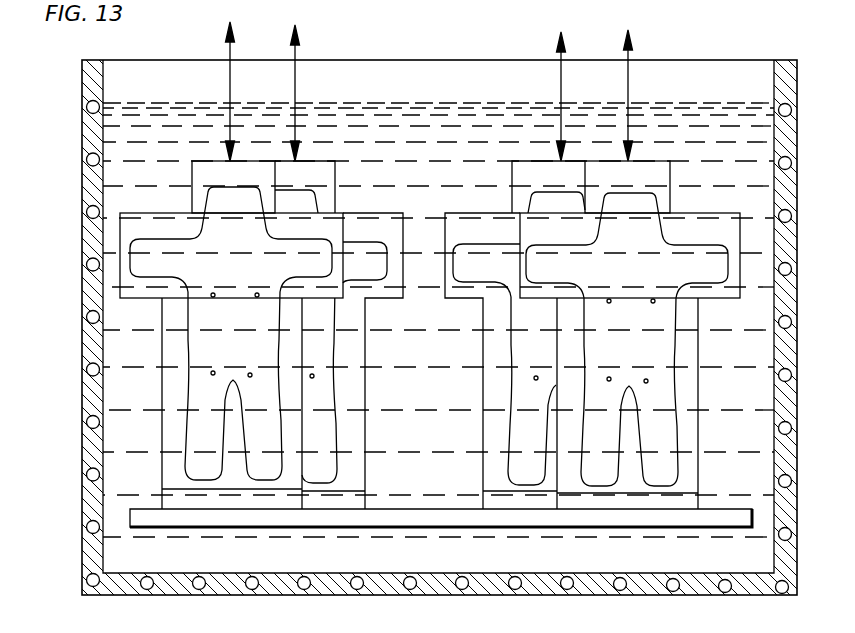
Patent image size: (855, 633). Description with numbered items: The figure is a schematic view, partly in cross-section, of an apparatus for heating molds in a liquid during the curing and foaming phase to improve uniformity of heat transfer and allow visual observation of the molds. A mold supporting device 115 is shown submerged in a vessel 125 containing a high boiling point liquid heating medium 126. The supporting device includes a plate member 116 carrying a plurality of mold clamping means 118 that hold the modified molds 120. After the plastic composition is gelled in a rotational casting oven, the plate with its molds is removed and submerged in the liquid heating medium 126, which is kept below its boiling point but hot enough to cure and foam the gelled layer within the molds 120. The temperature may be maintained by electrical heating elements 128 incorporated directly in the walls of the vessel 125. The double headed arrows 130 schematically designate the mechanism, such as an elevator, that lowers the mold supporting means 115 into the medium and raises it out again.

The mold supporting device 115 is at (372, 152).
The plate member 116 is at (724, 509).
The mold clamping means 118 is at (136, 528).
The mold 120 is at (153, 382).
The vessel 125 is at (73, 452).
The liquid heating medium 126 is at (456, 103).
The electrical heating elements 128 is at (790, 157).
The double headed arrows 130 is at (292, 79).